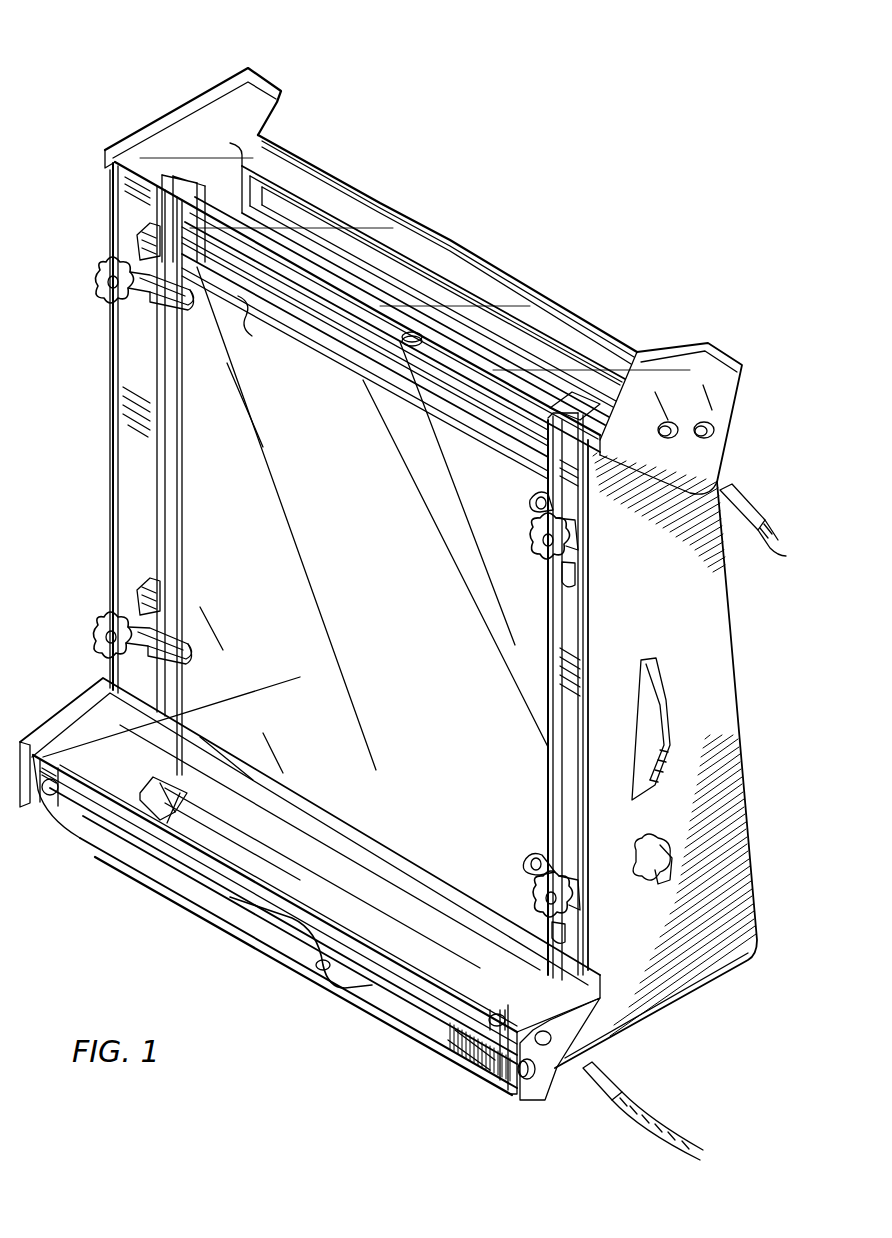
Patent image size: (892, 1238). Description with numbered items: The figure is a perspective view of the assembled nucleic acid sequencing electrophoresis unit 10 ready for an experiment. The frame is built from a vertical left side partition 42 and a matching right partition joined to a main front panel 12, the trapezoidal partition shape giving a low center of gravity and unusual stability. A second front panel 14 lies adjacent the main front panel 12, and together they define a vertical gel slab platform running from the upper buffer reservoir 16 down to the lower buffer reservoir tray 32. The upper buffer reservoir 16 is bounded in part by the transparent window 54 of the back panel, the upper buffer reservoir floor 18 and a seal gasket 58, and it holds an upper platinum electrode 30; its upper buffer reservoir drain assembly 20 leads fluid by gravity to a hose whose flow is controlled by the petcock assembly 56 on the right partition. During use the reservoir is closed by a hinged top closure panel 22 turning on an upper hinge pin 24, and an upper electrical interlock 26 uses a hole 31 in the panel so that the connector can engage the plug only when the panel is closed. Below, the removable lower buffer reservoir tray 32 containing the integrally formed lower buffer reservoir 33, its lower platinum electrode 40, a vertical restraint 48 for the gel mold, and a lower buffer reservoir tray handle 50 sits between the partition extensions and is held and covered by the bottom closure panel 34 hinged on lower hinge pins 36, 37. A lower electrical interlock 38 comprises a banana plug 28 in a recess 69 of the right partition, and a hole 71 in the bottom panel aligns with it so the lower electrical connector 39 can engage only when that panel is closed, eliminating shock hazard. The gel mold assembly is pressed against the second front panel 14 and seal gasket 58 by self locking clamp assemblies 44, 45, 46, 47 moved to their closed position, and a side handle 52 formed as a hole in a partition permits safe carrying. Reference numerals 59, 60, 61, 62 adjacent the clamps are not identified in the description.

The electrophoresis unit 10 is at (108, 226).
The main front panel 12 is at (134, 371).
The second front panel 14 is at (201, 459).
The upper buffer reservoir 16 is at (360, 320).
The upper buffer reservoir floor 18 is at (289, 281).
The upper buffer reservoir drain assembly 20 is at (422, 339).
The hinged top closure panel 22 is at (268, 91).
The upper hinge pin 24 is at (713, 433).
The upper electrical interlock 26 is at (668, 426).
The banana plug 28 is at (747, 508).
The upper platinum electrode 30 is at (525, 385).
The hole 31 is at (667, 457).
The lower buffer reservoir tray 32 is at (78, 842).
The lower buffer reservoir 33 is at (218, 837).
The bottom closure panel 34 is at (76, 704).
The lower hinge pin 36 is at (50, 812).
The lower hinge pin 37 is at (510, 1090).
The lower electrical interlock 38 is at (557, 1034).
The lower electrical connector 39 is at (620, 1082).
The lower platinum electrode 40 is at (376, 992).
The left side partition 42 is at (112, 527).
The self locking clamp assembly 44 is at (100, 307).
The self locking clamp assembly 45 is at (98, 640).
The self locking clamp assembly 46 is at (572, 547).
The self locking clamp assembly 47 is at (580, 900).
The vertical restraint 48 is at (140, 792).
The lower buffer reservoir tray handle 50 is at (281, 908).
The side handle 52 is at (669, 711).
The transparent window 54 is at (332, 215).
The petcock assembly 56 is at (673, 858).
The seal gasket 58 is at (256, 330).
The upper left clamp arm 59 is at (136, 252).
The lower left clamp arm 60 is at (138, 597).
The lower right clamp hook 61 is at (578, 935).
The upper right clamp hook 62 is at (570, 590).
The recess 69 is at (505, 1032).
The hole 71 is at (540, 1059).